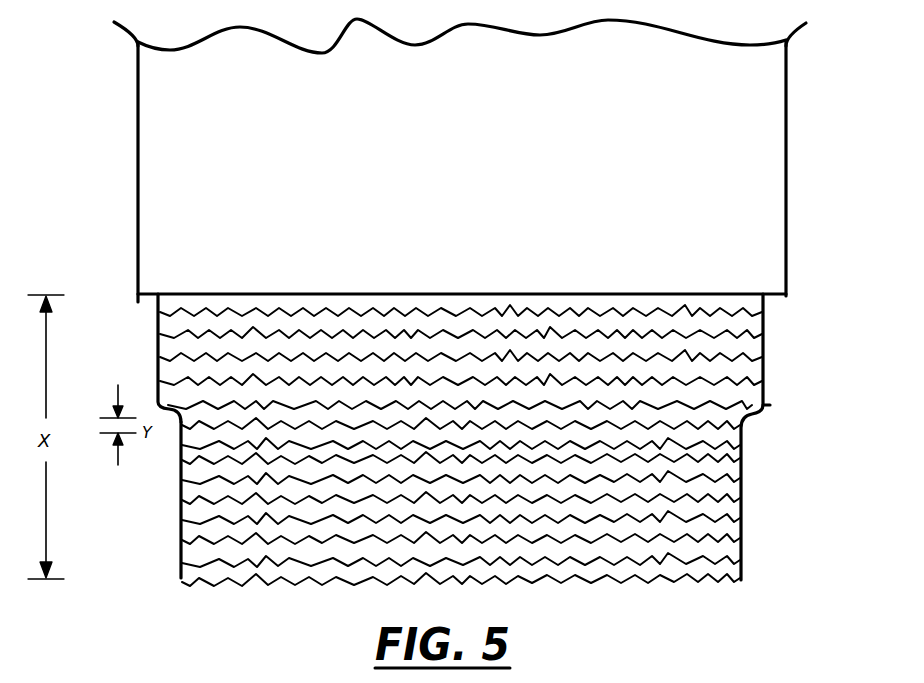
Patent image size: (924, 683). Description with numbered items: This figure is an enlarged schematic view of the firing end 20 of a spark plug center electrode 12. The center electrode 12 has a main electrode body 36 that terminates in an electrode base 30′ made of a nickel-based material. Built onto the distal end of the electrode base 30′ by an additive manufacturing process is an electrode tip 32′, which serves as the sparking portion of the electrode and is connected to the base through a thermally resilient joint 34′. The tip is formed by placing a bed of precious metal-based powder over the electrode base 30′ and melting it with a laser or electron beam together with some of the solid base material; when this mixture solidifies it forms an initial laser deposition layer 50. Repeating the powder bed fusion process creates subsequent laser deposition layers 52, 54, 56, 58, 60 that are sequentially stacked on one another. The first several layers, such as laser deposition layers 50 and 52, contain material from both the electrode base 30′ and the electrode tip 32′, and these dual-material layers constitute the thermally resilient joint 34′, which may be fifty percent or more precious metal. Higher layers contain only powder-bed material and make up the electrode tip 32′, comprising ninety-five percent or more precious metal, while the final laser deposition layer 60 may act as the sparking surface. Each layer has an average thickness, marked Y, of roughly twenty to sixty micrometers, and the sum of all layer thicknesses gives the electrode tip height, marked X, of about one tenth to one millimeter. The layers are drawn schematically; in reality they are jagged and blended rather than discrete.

The center electrode 12 is at (795, 104).
The firing end 20 is at (818, 462).
The electrode base 30′ is at (157, 198).
The electrode tip 32′ is at (218, 472).
The thermally resilient joint 34′ is at (158, 332).
The main electrode body 36 is at (157, 85).
The initial laser deposition layer 50 is at (748, 303).
The laser deposition layer 52 is at (764, 320).
The laser deposition layer 54 is at (727, 399).
The laser deposition layer 56 is at (743, 413).
The laser deposition layer 58 is at (716, 557).
The final laser deposition layer 60 is at (737, 573).